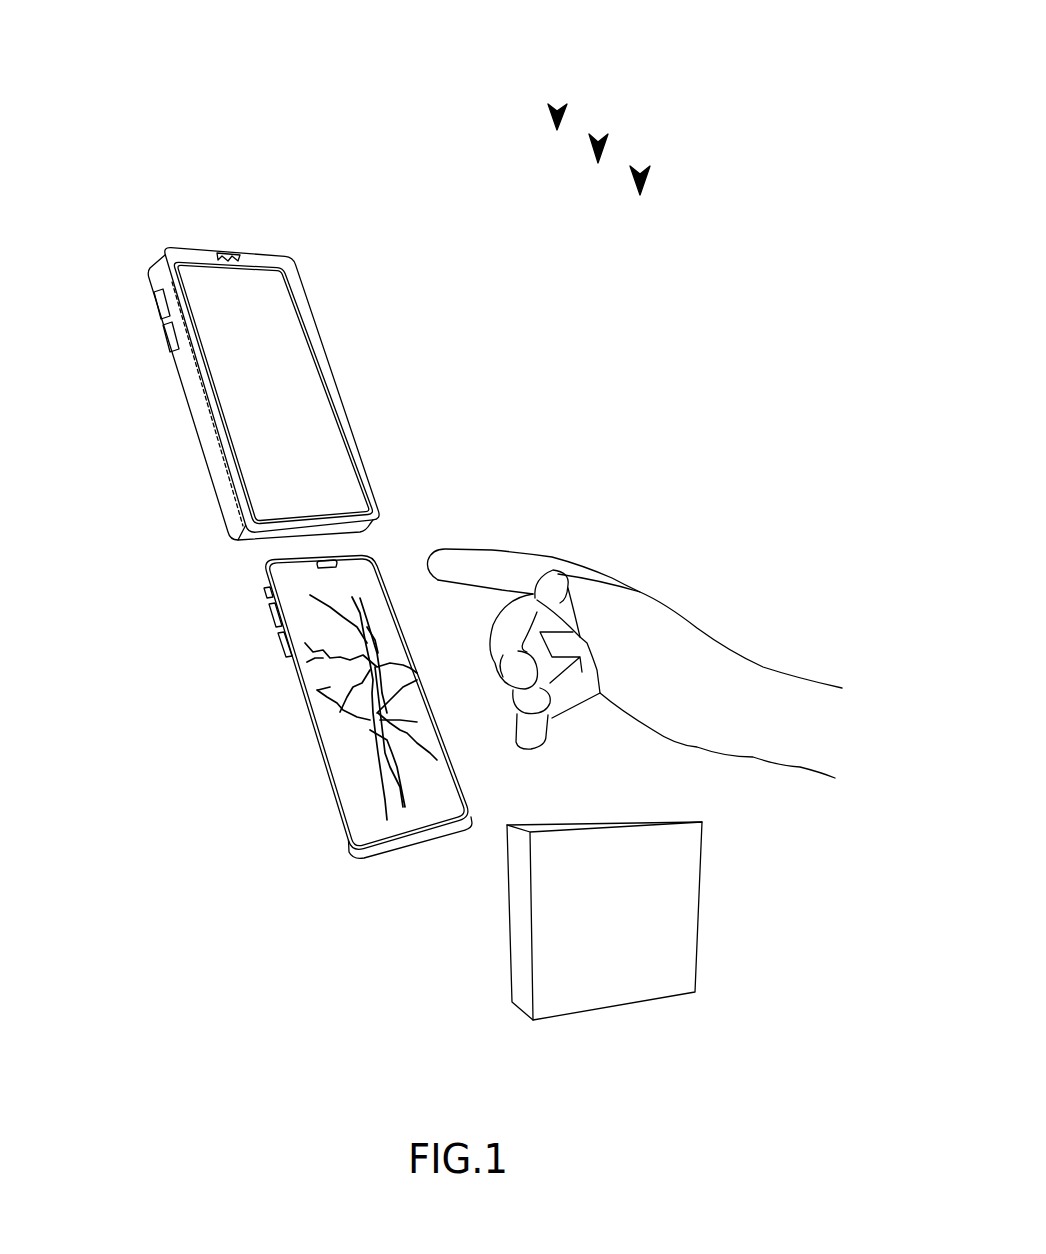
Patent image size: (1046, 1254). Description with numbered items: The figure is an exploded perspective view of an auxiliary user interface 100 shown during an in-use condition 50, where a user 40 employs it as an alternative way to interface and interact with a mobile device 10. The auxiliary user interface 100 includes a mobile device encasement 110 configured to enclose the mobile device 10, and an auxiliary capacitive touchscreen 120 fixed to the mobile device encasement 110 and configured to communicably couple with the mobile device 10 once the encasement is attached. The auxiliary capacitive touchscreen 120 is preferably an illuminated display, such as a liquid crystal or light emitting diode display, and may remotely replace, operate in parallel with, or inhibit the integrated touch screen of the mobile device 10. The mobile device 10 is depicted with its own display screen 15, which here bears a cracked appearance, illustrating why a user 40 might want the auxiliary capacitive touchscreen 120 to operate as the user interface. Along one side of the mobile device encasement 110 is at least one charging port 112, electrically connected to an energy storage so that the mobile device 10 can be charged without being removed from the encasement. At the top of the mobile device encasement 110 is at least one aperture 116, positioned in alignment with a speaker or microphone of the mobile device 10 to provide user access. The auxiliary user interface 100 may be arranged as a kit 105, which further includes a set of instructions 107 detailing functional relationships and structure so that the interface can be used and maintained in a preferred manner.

The in-use condition 50 is at (557, 108).
The auxiliary user interface 100 is at (599, 138).
The kit 105 is at (640, 170).
The mobile device encasement 110 is at (323, 350).
The aperture 116 is at (230, 253).
The charging port 112 is at (158, 303).
The auxiliary capacitive touchscreen 120 is at (275, 433).
The mobile device 10 is at (312, 732).
The display screen 15 is at (372, 729).
The user 40 is at (640, 610).
The instructions 107 is at (688, 893).